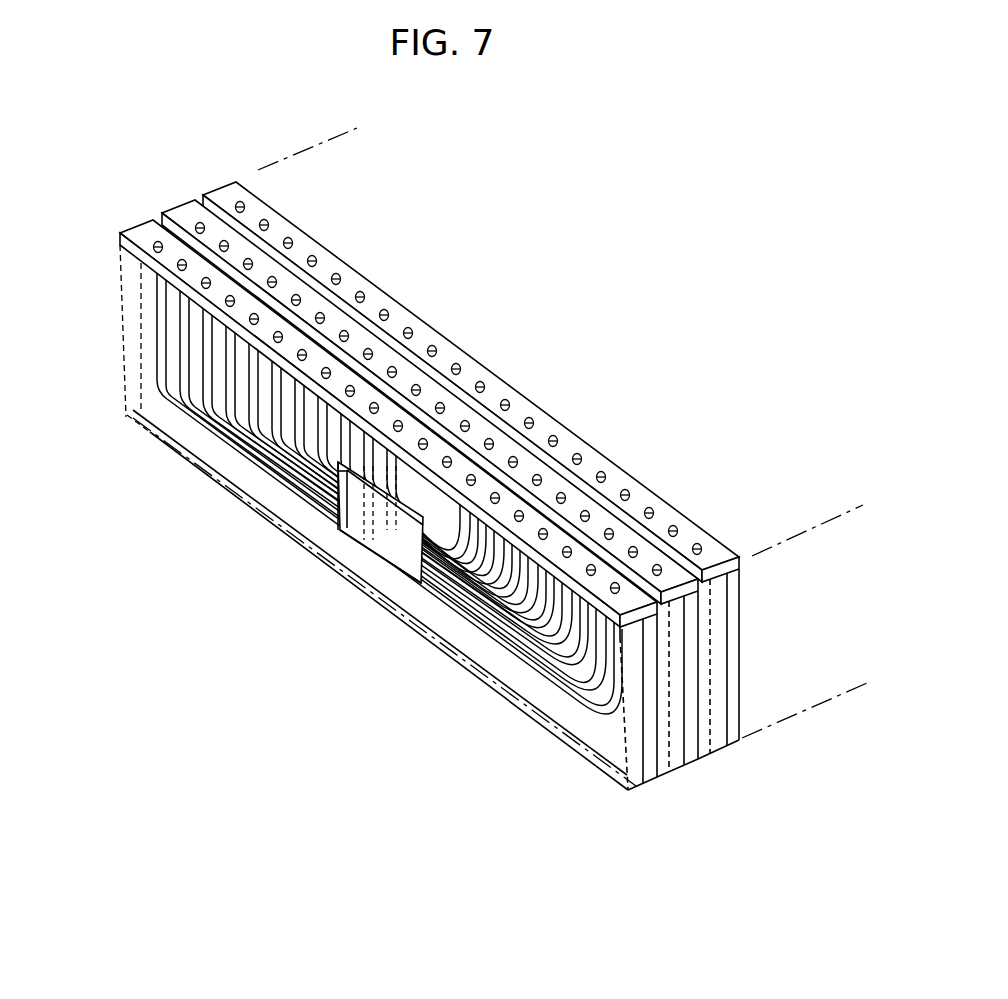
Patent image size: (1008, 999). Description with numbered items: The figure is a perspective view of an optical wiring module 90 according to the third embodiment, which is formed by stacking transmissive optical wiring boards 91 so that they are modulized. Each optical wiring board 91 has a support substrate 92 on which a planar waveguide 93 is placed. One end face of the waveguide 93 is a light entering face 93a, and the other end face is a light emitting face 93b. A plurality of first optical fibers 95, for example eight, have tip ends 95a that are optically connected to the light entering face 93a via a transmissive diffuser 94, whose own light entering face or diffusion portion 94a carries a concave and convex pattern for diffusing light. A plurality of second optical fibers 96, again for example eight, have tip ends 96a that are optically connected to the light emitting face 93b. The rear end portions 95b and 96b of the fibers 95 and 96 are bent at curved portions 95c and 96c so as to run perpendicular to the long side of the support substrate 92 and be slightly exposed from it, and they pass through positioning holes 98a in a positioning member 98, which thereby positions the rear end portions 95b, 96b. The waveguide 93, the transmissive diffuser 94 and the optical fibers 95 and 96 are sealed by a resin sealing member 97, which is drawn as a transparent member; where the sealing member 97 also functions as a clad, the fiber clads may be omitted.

The optical wiring module 90 is at (248, 146).
The optical wiring board 91 is at (168, 191).
The support substrate 92 is at (656, 782).
The planar waveguide 93 is at (317, 547).
The light entering face 93a is at (345, 570).
The light emitting face 93b is at (405, 592).
The transmissive diffuser 94 is at (317, 520).
The light entering face (diffusion portion) 94a is at (335, 470).
The first optical fibers 95 is at (312, 488).
The tip ends of the first optical fibers 95a is at (300, 490).
The rear end portions of the first optical fibers 95b is at (190, 288).
The curved portions of the first optical fibers 95c is at (160, 410).
The second optical fibers 96 is at (480, 674).
The tip ends of the second optical fibers 96a is at (435, 587).
The rear end portions of the second optical fibers 96b is at (592, 573).
The curved portions of the second optical fibers 96c is at (622, 710).
The sealing member 97 is at (430, 645).
The positioning member 98 is at (344, 484).
The positioning holes 98a is at (158, 250).